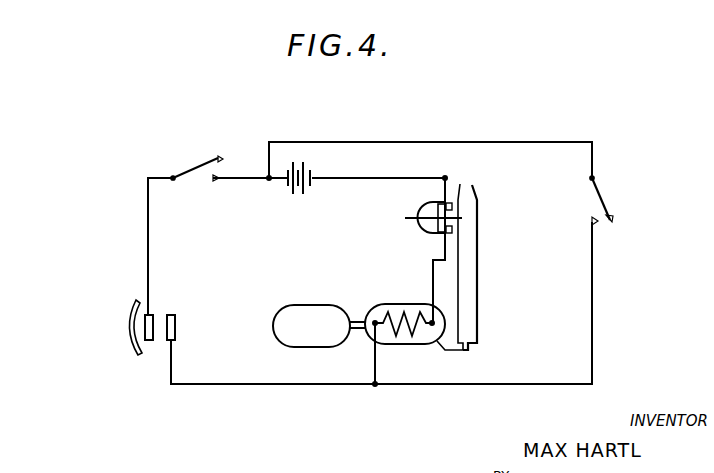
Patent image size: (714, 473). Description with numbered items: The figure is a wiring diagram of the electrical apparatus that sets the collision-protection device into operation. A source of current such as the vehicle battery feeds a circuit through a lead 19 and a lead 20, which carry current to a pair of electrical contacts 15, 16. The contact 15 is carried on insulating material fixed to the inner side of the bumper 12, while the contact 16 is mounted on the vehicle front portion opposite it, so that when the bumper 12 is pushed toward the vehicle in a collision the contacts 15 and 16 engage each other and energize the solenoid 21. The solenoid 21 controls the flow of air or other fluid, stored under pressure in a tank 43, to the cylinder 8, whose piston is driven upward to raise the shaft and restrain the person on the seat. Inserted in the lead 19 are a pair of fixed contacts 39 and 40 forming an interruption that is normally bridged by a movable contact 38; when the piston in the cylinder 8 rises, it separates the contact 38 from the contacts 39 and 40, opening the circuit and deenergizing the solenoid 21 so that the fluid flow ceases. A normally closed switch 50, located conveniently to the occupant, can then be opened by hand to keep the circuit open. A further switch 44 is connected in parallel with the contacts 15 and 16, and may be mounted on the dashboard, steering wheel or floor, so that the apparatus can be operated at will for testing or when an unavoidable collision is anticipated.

The cylinder 8 is at (470, 285).
The bumper 12 is at (130, 324).
The electrical contact 15 is at (150, 345).
The electrical contact 16 is at (172, 312).
The lead 19 is at (333, 180).
The lead 20 is at (160, 180).
The solenoid 21 is at (419, 345).
The contact 38 is at (437, 213).
The contact 39 is at (452, 207).
The contact 40 is at (452, 229).
The tank 43 is at (309, 338).
The switch 44 is at (603, 193).
The switch 50 is at (193, 160).